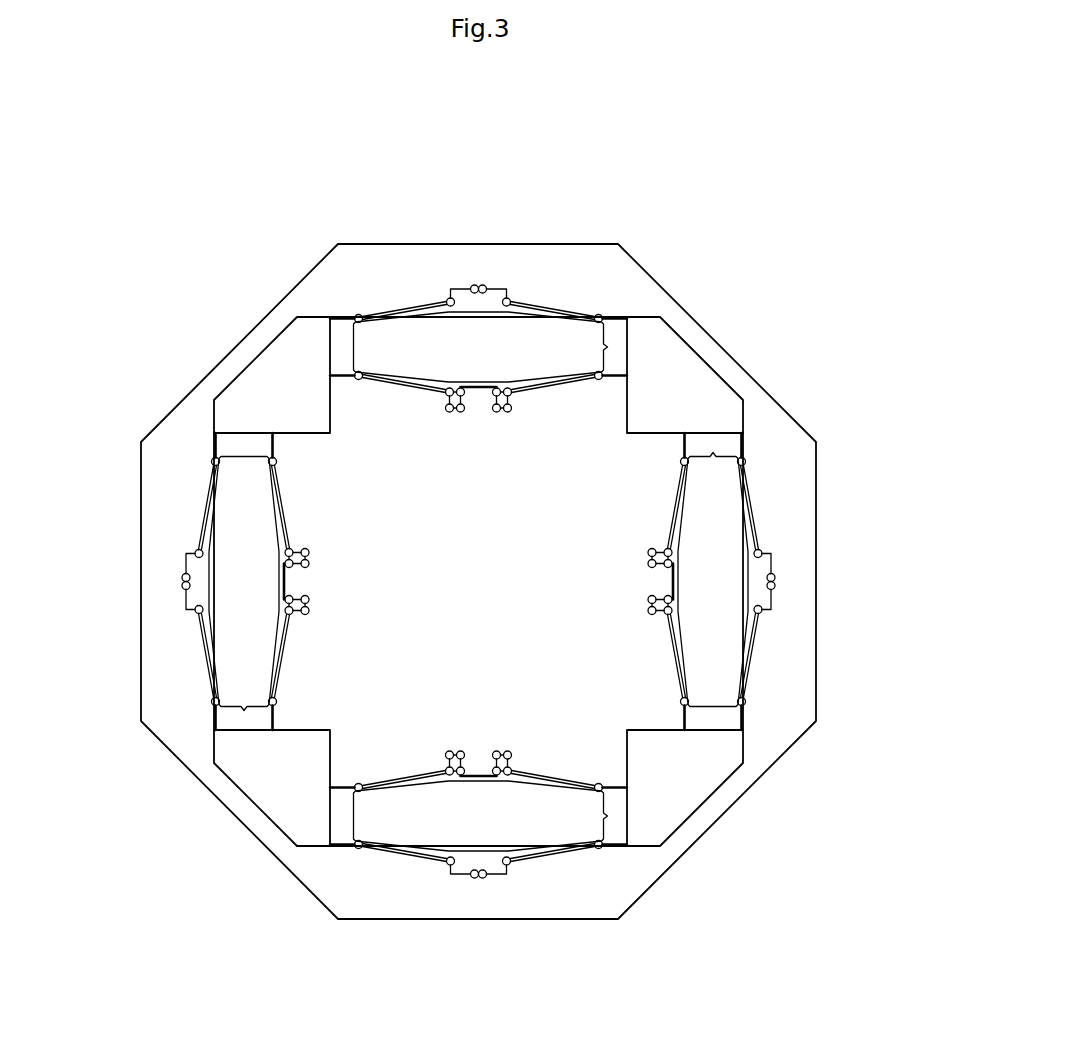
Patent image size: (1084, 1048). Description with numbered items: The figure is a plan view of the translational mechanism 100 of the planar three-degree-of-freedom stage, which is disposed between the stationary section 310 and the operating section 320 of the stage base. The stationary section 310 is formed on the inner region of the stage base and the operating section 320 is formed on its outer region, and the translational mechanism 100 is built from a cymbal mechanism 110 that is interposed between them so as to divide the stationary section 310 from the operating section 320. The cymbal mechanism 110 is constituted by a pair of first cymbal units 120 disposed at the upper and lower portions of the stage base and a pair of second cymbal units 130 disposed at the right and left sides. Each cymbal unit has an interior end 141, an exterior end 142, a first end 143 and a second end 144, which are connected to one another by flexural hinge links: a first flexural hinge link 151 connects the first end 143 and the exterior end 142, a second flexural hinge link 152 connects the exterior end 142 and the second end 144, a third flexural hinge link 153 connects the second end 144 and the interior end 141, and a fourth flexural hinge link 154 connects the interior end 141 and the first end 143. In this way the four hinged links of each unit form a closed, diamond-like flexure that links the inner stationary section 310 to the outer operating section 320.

The translational mechanism 100 is at (750, 178).
The cymbal mechanism 110 is at (476, 584).
The first cymbal unit 120 is at (593, 297).
The second cymbal unit 130 is at (193, 501).
The interior end 141 is at (560, 373).
The exterior end 142 is at (465, 308).
The first end 143 is at (342, 335).
The second end 144 is at (613, 330).
The first flexural hinge link 151 is at (407, 315).
The second flexural hinge link 152 is at (548, 318).
The third flexural hinge link 153 is at (477, 403).
The fourth flexural hinge link 154 is at (387, 377).
The stationary section 310 is at (660, 722).
The operating section 320 is at (793, 692).